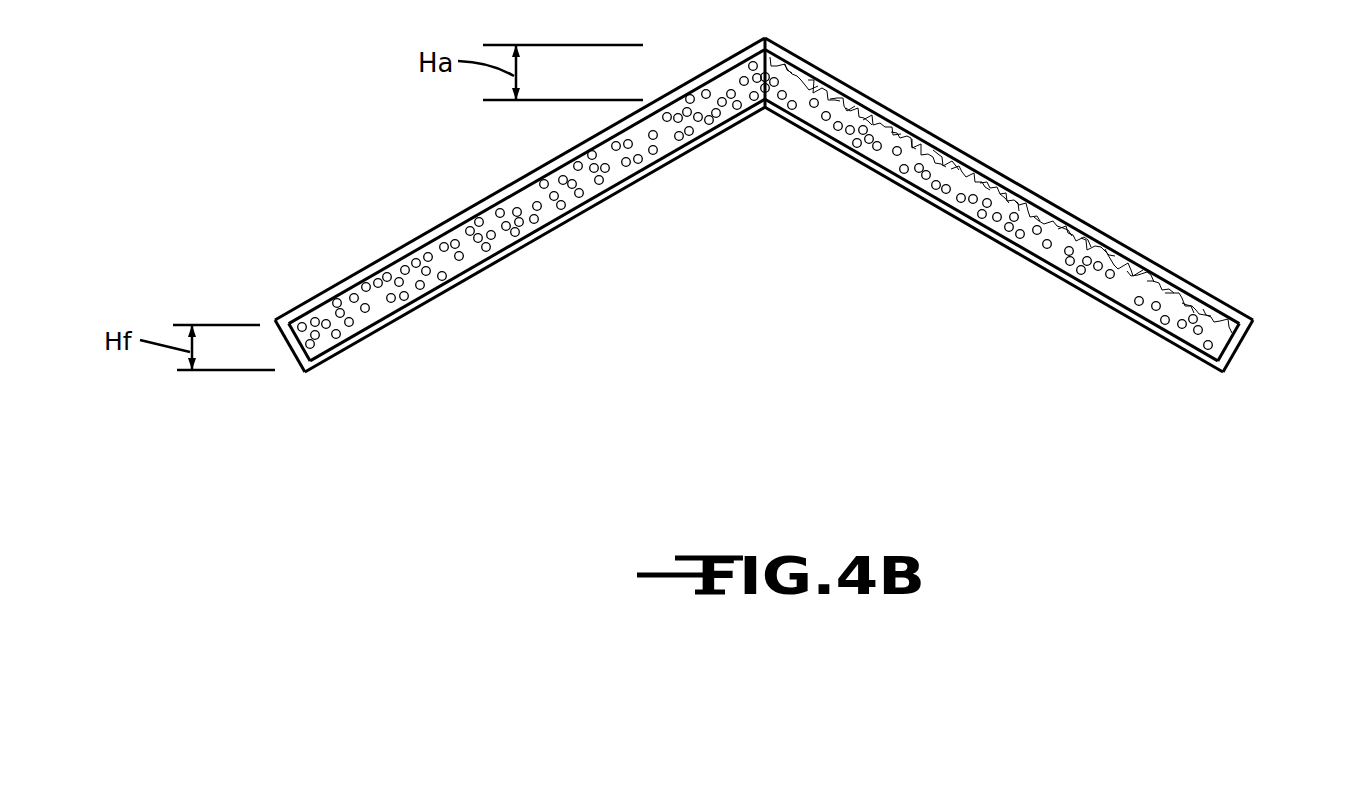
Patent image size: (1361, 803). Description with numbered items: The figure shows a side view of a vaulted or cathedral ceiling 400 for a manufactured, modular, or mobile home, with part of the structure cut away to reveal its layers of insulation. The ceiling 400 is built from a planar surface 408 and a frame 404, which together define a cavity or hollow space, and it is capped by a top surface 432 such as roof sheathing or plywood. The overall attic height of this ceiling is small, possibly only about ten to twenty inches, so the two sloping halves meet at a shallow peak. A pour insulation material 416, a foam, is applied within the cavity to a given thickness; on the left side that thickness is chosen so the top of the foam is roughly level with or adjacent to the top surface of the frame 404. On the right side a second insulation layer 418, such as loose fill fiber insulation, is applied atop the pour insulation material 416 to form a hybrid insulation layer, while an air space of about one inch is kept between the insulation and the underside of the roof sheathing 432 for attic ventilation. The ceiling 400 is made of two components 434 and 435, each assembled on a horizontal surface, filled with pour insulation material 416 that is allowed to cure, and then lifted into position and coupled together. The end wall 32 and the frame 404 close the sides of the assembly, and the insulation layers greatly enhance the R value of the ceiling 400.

The panel 32 is at (350, 276).
The vaulted ceiling 400 is at (771, 234).
The frame 404 is at (302, 348).
The planar surface 408 is at (398, 325).
The pour insulation material 416 is at (510, 218).
The second insulation layer 418 is at (1076, 228).
The top surface 432 is at (948, 142).
The component 434 is at (649, 203).
The component 435 is at (852, 196).